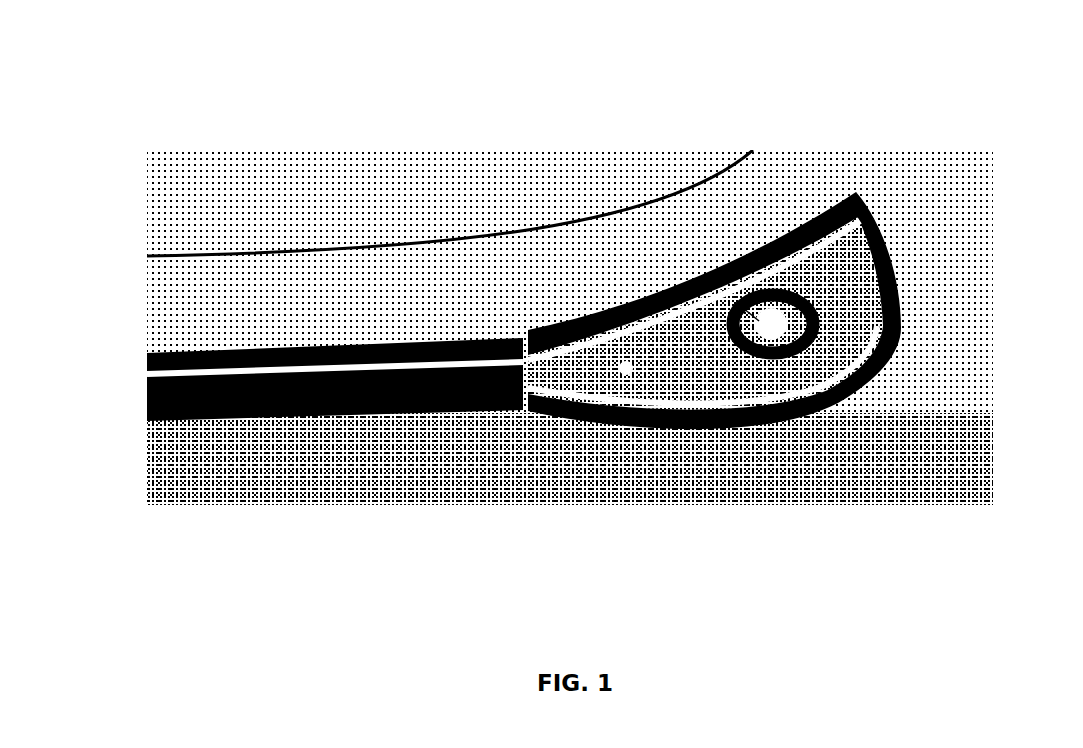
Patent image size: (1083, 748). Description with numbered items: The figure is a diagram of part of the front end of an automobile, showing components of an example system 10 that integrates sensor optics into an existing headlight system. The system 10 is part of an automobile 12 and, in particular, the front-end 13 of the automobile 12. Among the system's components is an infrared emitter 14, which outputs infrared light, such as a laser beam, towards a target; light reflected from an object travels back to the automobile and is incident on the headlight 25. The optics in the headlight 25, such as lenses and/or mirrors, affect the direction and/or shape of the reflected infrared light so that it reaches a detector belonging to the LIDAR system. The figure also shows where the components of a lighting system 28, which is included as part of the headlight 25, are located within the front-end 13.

The system 10 is at (307, 67).
The automobile 12 is at (138, 197).
The front-end 13 is at (385, 403).
The infrared emitter 14 is at (615, 368).
The headlight 25 is at (791, 294).
The lighting system 28 is at (750, 312).